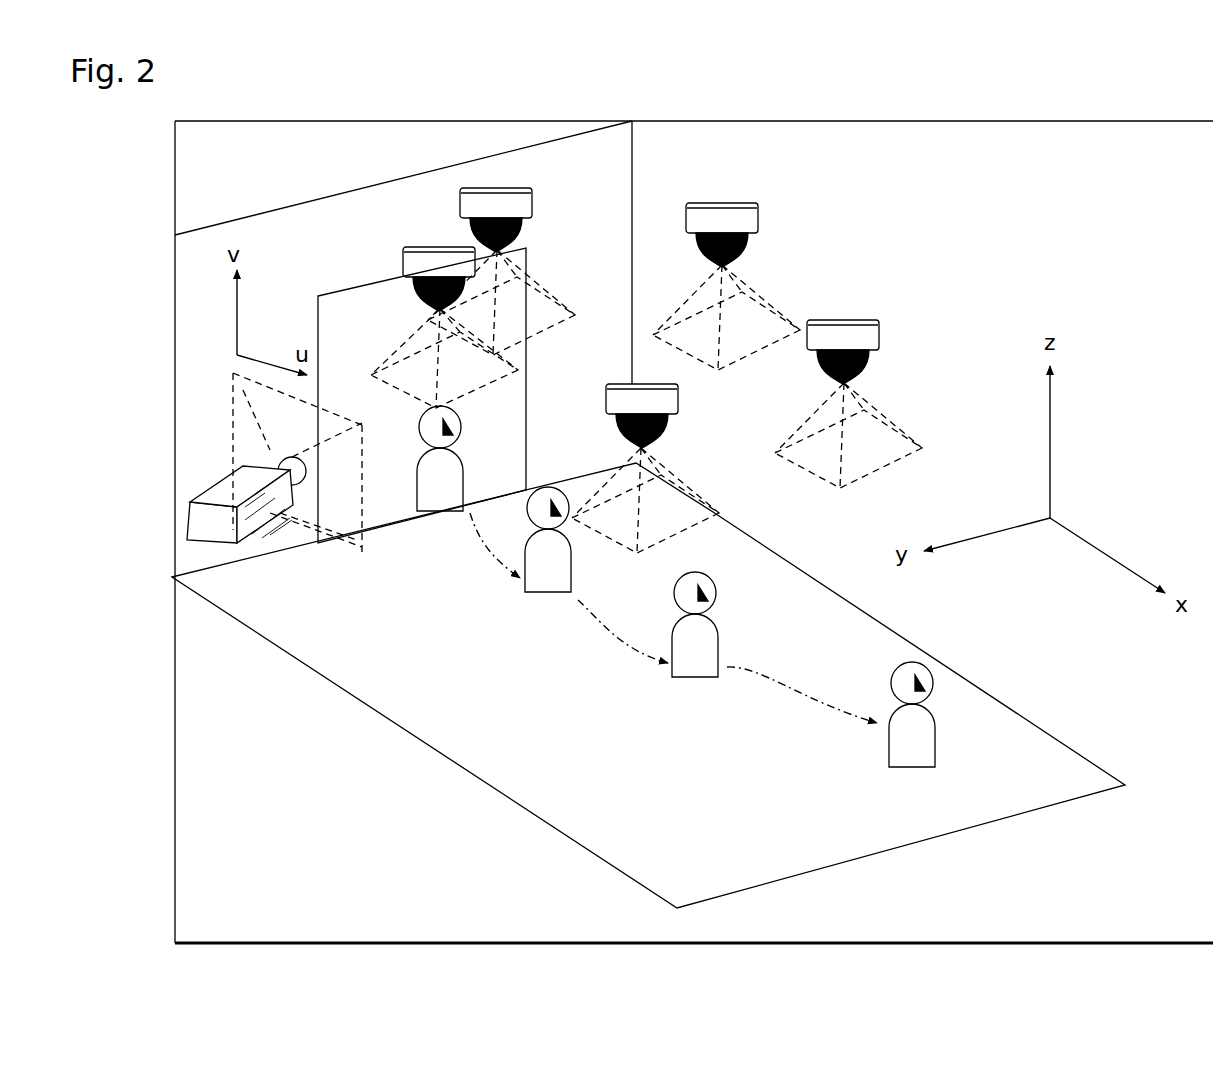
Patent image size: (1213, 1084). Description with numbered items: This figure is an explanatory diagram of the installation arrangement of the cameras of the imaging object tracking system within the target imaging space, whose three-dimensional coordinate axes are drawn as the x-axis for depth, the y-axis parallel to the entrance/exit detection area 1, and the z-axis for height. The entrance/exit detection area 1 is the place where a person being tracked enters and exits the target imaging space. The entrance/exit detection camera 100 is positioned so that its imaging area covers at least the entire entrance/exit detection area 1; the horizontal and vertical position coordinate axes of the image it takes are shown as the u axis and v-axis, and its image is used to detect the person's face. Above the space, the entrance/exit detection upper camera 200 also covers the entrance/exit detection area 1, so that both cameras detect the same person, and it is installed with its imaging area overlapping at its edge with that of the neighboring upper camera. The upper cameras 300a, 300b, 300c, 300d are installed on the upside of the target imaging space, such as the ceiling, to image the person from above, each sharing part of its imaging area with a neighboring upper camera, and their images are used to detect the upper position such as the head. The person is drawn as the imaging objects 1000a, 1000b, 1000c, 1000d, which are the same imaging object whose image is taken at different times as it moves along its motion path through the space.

The entrance/exit detection area 1 is at (527, 418).
The entrance/exit detection camera 100 is at (245, 543).
The entrance/exit detection upper camera 200 is at (460, 196).
The upper camera 300a is at (745, 205).
The upper camera 300b is at (880, 330).
The upper camera 300c is at (404, 258).
The upper camera 300d is at (678, 410).
The imaging object 1000a is at (452, 511).
The imaging object 1000b is at (555, 597).
The imaging object 1000c is at (702, 679).
The imaging object 1000d is at (902, 770).